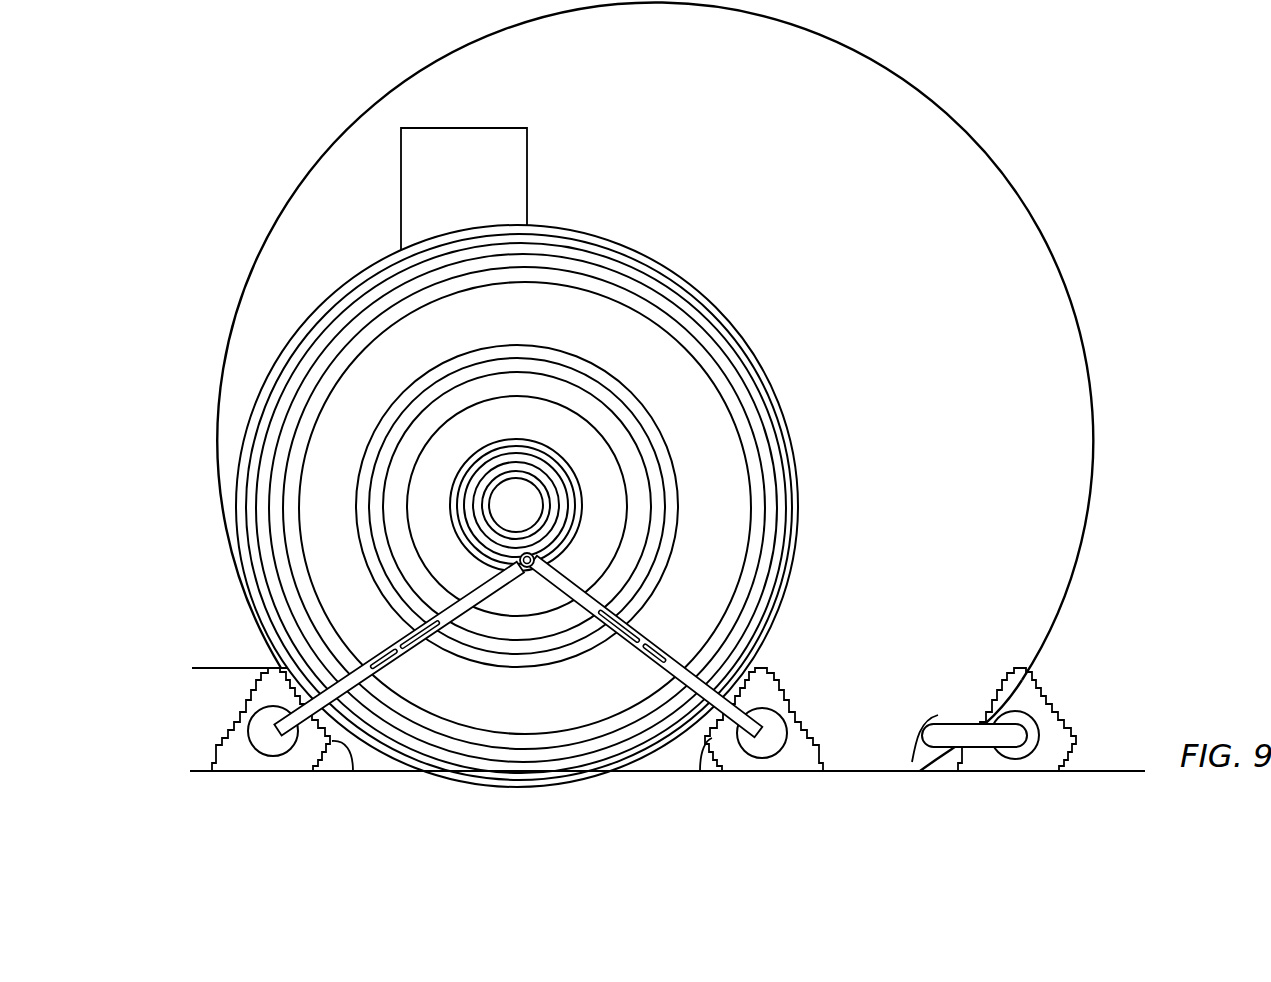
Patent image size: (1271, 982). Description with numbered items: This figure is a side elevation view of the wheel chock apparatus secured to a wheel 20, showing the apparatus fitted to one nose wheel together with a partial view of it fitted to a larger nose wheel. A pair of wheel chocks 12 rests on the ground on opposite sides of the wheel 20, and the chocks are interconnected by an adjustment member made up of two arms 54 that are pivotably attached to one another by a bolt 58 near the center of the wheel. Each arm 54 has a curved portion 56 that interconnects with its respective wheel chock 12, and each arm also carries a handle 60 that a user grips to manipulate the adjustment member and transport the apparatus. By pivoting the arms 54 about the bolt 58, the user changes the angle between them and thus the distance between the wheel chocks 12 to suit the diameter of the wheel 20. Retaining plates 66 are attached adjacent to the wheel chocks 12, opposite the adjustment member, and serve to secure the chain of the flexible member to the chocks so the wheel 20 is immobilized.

The wheel chock 12 is at (216, 758).
The wheel 20 is at (745, 336).
The arm 54 is at (484, 595).
The curved portion 56 is at (298, 740).
The bolt 58 is at (513, 580).
The handle 60 is at (392, 661).
The retaining plate 66 is at (353, 771).